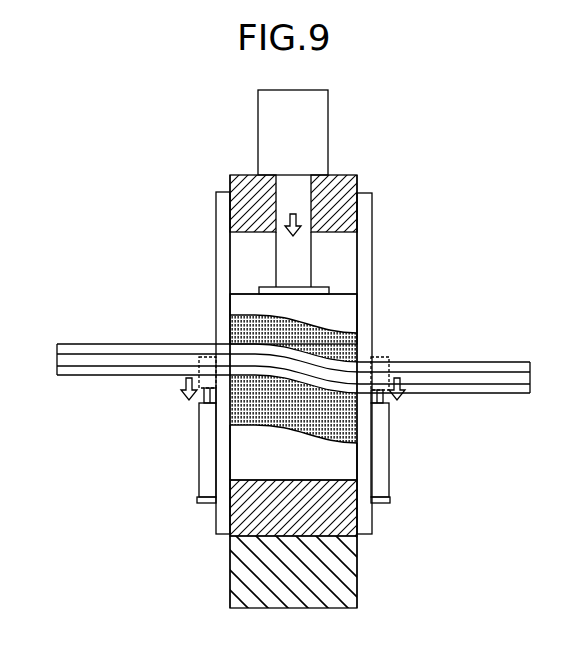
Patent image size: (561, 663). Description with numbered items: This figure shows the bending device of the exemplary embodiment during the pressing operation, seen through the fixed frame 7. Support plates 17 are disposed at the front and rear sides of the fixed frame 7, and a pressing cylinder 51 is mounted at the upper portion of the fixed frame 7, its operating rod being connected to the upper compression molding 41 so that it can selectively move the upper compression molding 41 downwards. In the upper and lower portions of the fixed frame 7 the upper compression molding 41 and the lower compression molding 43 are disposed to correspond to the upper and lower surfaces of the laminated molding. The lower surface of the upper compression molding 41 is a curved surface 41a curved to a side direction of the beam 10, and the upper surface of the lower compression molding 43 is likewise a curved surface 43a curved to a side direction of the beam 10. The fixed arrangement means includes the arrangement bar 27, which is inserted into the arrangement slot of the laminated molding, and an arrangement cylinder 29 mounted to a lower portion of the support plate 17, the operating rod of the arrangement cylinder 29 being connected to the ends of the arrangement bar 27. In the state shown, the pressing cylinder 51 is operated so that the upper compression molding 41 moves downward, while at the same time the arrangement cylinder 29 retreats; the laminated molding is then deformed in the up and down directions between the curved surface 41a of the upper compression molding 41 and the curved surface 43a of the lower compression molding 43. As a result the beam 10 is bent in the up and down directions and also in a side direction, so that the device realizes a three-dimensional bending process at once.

The pressing cylinder 51 is at (272, 120).
The fixed frame 7 is at (338, 178).
The support plate 17 is at (224, 210).
The upper compression molding 41 is at (345, 307).
The curved surface 41a is at (340, 323).
The arrangement bar 27 is at (210, 358).
The beam 10 is at (492, 378).
The lower compression molding 43 is at (342, 455).
The curved surface 43a is at (292, 427).
The arrangement cylinder 29 is at (208, 478).